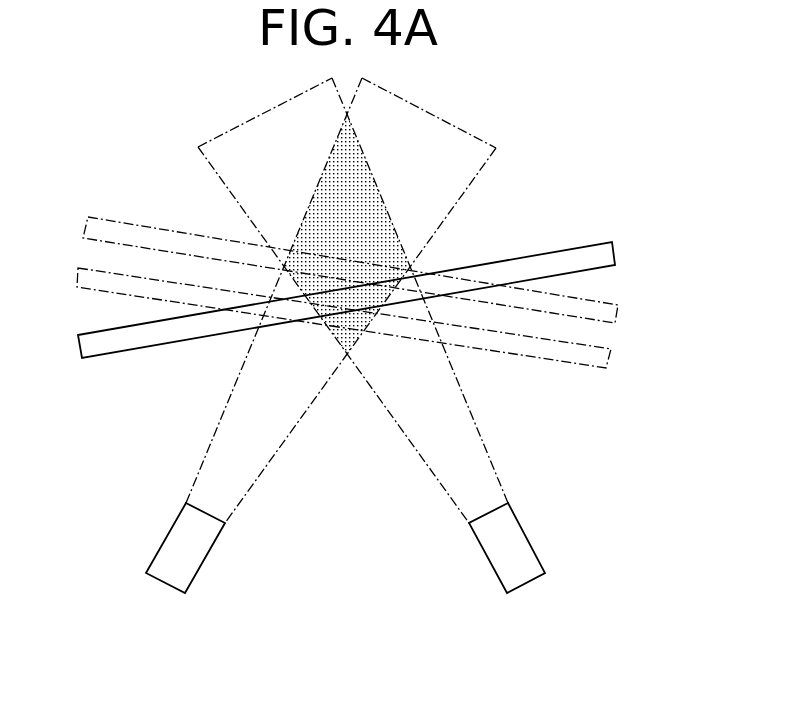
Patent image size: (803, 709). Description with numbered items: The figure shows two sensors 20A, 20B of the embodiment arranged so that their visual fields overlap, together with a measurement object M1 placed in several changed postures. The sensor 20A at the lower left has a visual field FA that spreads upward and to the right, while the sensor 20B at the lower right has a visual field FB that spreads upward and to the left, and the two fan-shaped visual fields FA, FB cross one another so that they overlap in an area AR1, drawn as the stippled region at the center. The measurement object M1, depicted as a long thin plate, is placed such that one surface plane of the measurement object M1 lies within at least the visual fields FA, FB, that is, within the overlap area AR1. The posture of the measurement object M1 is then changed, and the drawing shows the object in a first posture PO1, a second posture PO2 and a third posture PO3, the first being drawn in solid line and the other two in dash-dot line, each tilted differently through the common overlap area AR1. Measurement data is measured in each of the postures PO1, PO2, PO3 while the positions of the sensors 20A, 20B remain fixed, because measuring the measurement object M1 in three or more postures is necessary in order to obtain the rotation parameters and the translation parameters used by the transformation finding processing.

The sensor 20A is at (165, 537).
The sensor 20B is at (527, 537).
The visual field FA is at (208, 445).
The visual field FB is at (485, 445).
The area AR1 is at (355, 232).
The measurement object M1 is at (385, 265).
The posture PO1 is at (615, 255).
The posture PO2 is at (617, 315).
The posture PO3 is at (608, 360).